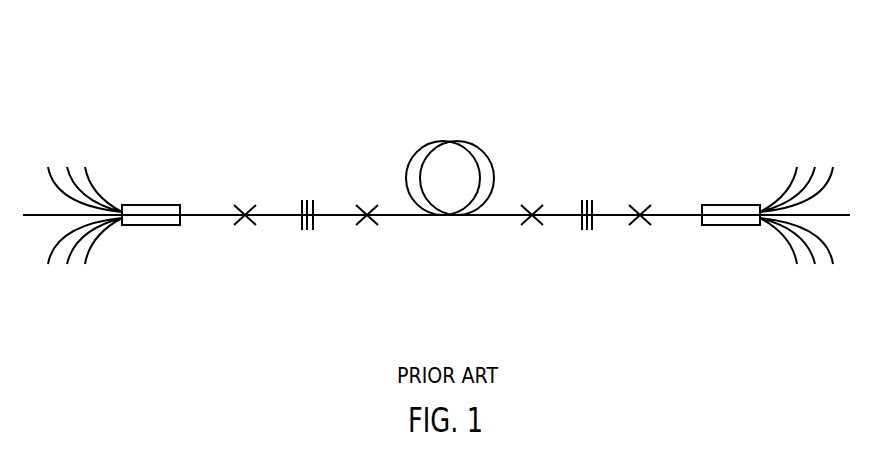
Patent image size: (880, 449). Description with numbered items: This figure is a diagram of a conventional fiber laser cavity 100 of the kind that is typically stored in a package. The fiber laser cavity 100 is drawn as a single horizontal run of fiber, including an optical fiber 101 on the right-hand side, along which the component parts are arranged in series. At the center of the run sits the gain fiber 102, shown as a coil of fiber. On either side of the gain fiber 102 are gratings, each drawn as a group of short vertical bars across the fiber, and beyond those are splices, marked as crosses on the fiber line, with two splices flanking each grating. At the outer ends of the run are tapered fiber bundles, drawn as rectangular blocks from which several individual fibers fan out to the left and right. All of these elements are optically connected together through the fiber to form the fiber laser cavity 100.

The fiber laser cavity 100 is at (752, 42).
The optical fiber 101 is at (672, 215).
The gain fiber 102 is at (479, 155).